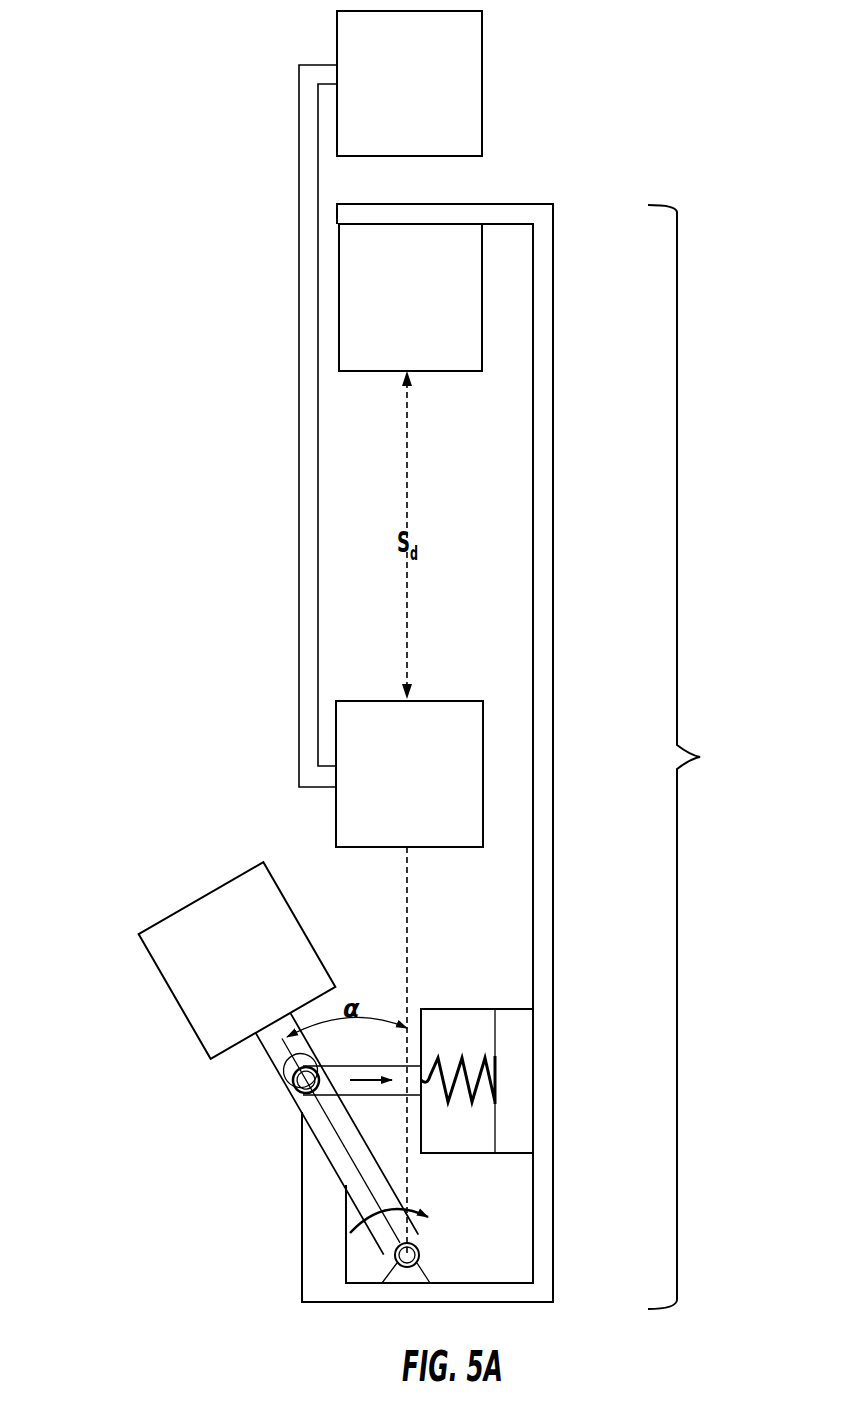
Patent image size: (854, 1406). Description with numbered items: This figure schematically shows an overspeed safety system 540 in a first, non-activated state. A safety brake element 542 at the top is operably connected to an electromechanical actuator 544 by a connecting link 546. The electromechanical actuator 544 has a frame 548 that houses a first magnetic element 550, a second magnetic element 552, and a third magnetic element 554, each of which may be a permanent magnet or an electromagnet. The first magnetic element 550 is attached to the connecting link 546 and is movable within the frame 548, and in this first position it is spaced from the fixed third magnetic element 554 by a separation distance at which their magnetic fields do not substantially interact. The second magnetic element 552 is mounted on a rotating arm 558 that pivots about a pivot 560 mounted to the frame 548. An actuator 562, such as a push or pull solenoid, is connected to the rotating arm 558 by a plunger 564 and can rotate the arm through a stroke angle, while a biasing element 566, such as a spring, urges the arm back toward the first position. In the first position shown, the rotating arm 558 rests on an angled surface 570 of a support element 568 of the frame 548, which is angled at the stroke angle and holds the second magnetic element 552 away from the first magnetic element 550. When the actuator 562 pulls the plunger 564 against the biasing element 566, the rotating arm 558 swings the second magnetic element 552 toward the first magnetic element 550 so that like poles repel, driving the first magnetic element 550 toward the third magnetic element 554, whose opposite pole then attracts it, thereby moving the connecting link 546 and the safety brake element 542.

The overspeed safety system 540 is at (120, 360).
The safety brake element 542 is at (462, 69).
The electromechanical actuator 544 is at (700, 757).
The connecting link 546 is at (303, 518).
The frame 548 is at (548, 582).
The first magnetic element 550 is at (352, 823).
The second magnetic element 552 is at (155, 947).
The third magnetic element 554 is at (462, 290).
The rotating arm 558 is at (265, 1048).
The pivot 560 is at (423, 1258).
The actuator 562 is at (475, 1009).
The plunger 564 is at (375, 1095).
The biasing element 566 is at (470, 1100).
The support element 568 is at (313, 1253).
The angled surface 570 is at (323, 1145).